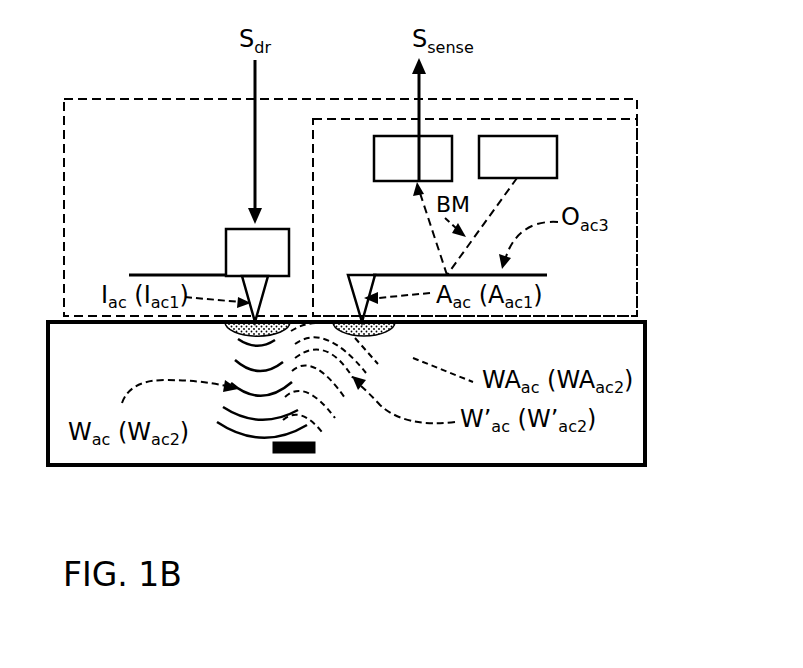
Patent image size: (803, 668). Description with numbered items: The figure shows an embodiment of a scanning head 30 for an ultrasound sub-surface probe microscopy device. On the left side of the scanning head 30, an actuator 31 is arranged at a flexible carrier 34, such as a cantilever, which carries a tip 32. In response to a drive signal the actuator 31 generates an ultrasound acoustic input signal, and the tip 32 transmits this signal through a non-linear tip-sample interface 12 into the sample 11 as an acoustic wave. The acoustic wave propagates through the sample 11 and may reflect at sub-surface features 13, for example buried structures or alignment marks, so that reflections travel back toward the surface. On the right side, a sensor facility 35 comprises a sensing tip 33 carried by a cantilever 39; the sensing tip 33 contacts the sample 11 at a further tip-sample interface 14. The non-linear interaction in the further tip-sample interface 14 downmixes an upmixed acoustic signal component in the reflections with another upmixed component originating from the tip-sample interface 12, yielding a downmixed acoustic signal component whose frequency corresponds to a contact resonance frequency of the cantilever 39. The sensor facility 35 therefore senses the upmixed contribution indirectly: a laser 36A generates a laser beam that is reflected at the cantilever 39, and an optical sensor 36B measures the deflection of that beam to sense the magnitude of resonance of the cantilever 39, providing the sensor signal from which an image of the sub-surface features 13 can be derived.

The scanning head 30 is at (165, 156).
The sensor facility 35 is at (603, 167).
The sensor 36B is at (432, 167).
The laser 36A is at (549, 167).
The actuator 31 is at (270, 264).
The flexible carrier 34 is at (177, 261).
The cantilever 39 is at (477, 273).
The tip 32 is at (276, 296).
The sensing tip 33 is at (343, 295).
The sample 11 is at (622, 362).
The tip-sample interface 12 is at (256, 332).
The further tip-sample interface 14 is at (370, 330).
The sub-surface features 13 is at (328, 444).